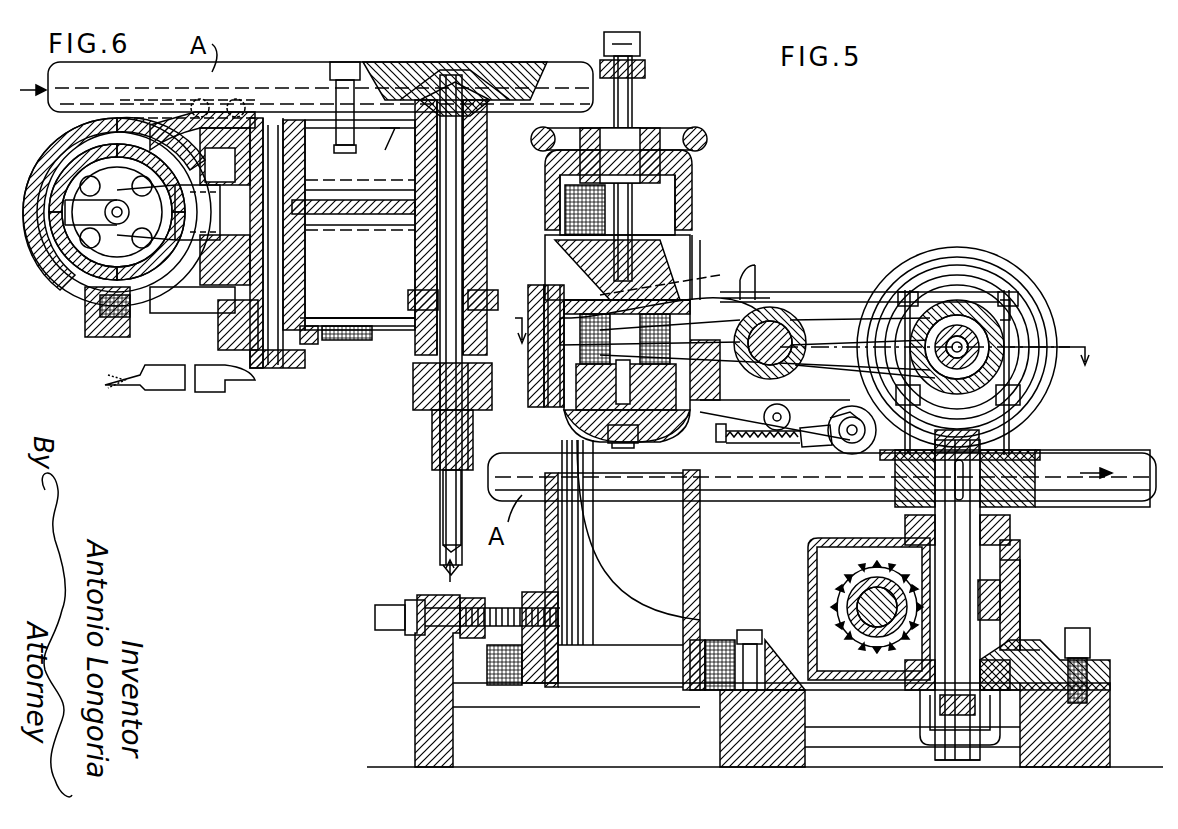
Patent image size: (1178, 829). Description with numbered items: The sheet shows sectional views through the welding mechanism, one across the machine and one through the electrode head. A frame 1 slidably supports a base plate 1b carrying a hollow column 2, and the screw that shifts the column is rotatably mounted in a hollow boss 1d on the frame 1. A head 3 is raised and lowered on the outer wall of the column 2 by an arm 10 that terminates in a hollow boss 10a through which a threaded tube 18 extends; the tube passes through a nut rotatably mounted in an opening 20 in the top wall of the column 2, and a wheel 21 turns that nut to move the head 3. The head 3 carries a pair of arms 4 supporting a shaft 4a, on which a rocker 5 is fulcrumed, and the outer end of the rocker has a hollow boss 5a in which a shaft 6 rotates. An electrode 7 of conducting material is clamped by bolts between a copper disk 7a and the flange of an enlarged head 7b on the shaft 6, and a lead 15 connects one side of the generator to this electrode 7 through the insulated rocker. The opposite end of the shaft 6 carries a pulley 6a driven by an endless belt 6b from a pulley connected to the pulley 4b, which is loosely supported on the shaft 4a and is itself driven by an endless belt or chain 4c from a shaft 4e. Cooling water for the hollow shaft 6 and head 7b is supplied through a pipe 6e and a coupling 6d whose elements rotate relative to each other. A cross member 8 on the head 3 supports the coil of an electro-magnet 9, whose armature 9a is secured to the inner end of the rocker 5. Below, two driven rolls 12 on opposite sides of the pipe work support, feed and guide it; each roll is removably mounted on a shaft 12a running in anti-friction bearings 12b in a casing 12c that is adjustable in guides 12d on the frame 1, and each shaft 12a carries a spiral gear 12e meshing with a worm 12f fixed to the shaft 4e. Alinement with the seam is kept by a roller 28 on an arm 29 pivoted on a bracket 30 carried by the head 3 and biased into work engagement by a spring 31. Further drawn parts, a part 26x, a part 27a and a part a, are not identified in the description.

In FIG. 5, the frame 1 is at (565, 766).
In FIG. 5, the base plate 1b is at (560, 690).
In FIG. 5, the hollow boss 1d is at (420, 600).
In FIG. 5, the hollow column 2 is at (700, 556).
In FIG. 6, the head 3 is at (70, 280).
In FIG. 6, the arms 4 is at (232, 140).
In FIG. 5, the arms 4 is at (725, 312).
In FIG. 6, the shaft 4a is at (290, 180).
In FIG. 5, the shaft 4a is at (800, 368).
In FIG. 6, the pulley 4b is at (318, 346).
In FIG. 6, the endless belt or chain 4c is at (360, 342).
In FIG. 5, the shaft 4e is at (870, 625).
In FIG. 6, the rocker 5 is at (350, 222).
In FIG. 5, the rocker 5 is at (822, 322).
In FIG. 6, the hollow boss 5a is at (478, 262).
In FIG. 5, the hollow boss 5a is at (960, 310).
In FIG. 6, the shaft 6 is at (420, 230).
In FIG. 5, the shaft 6 is at (950, 392).
In FIG. 6, the pulley 6a is at (412, 332).
In FIG. 6, the endless belt 6b is at (360, 318).
In FIG. 6, the coupling 6d is at (413, 395).
In FIG. 6, the pipe 6e is at (443, 528).
In FIG. 6, the electrode 7 is at (520, 82).
In FIG. 5, the electrode 7 is at (1035, 296).
In FIG. 6, the copper disk 7a is at (452, 84).
In FIG. 6, the enlarged head 7b is at (385, 128).
In FIG. 6, the cross member 8 is at (62, 150).
In FIG. 5, the cross member 8 is at (655, 428).
In FIG. 6, the electro-magnet 9 is at (48, 278).
In FIG. 5, the electro-magnet 9 is at (535, 410).
In FIG. 5, the armature 9a is at (528, 370).
In FIG. 5, the arm 10 is at (556, 272).
In FIG. 5, the hollow boss 10a is at (632, 250).
In FIG. 5, the driven rolls 12 is at (1040, 500).
In FIG. 5, the roll shaft 12a is at (985, 558).
In FIG. 5, the anti-friction bearings 12b is at (900, 660).
In FIG. 5, the casing 12c is at (1022, 607).
In FIG. 5, the guides 12d is at (1050, 648).
In FIG. 6, the spiral gear 12e is at (178, 318).
In FIG. 5, the spiral gear 12e is at (1000, 590).
In FIG. 5, the worm 12f is at (822, 572).
In FIG. 6, the lead 15 is at (138, 390).
In FIG. 5, the tube 18 is at (640, 100).
In FIG. 5, the opening 20 is at (692, 165).
In FIG. 5, the wheel 21 is at (700, 135).
In FIG. 5, the pipe / frame 26x is at (1063, 310).
In FIG. 5, the roller 27a is at (845, 395).
In FIG. 5, the roller 28 is at (840, 448).
In FIG. 5, the arm 29 is at (815, 446).
In FIG. 5, the bracket 30 is at (720, 442).
In FIG. 5, the spring 31 is at (760, 444).
In FIG. 6, the bolt a is at (330, 82).